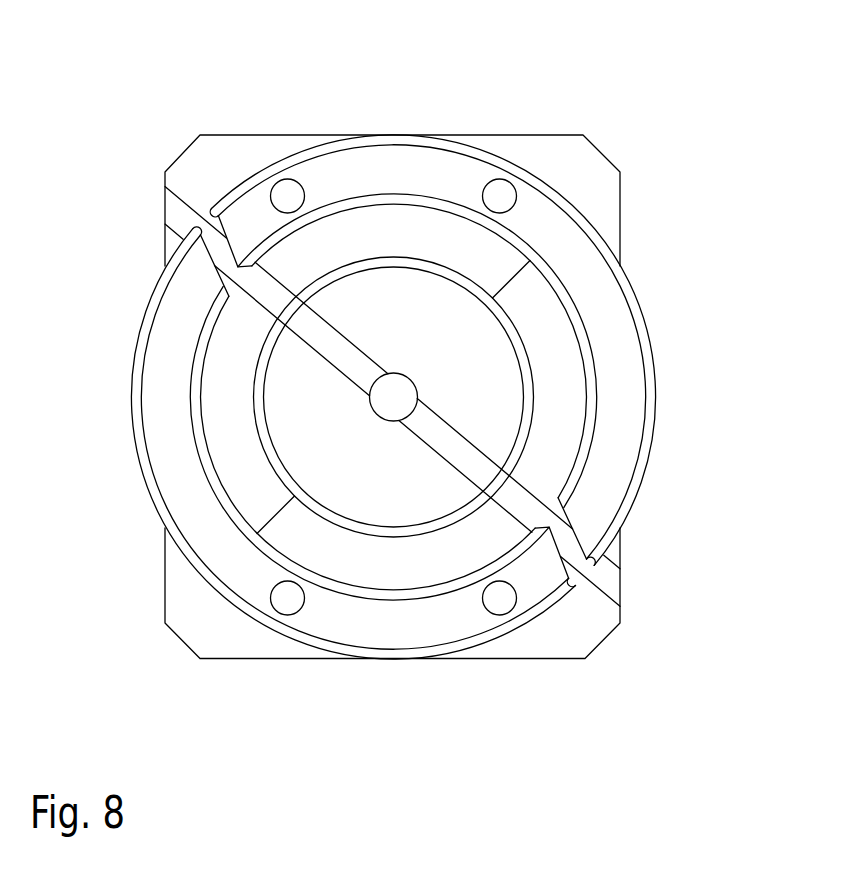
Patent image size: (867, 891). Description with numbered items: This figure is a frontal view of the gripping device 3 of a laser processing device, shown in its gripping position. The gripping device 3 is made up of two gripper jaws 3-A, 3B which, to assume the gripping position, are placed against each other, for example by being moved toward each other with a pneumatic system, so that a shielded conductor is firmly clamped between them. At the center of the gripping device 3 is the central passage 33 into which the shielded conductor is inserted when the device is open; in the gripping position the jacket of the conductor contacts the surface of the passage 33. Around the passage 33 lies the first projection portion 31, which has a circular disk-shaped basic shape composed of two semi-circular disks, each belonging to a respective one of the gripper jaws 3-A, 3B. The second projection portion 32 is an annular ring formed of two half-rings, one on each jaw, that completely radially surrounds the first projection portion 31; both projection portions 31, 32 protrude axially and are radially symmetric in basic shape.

The gripping device 3 is at (655, 100).
The gripper jaw 3-A is at (558, 162).
The gripper jaw 3B is at (555, 633).
The first projection portion 31 is at (388, 305).
The second projection portion 32 is at (333, 177).
The central passage 33 is at (396, 397).